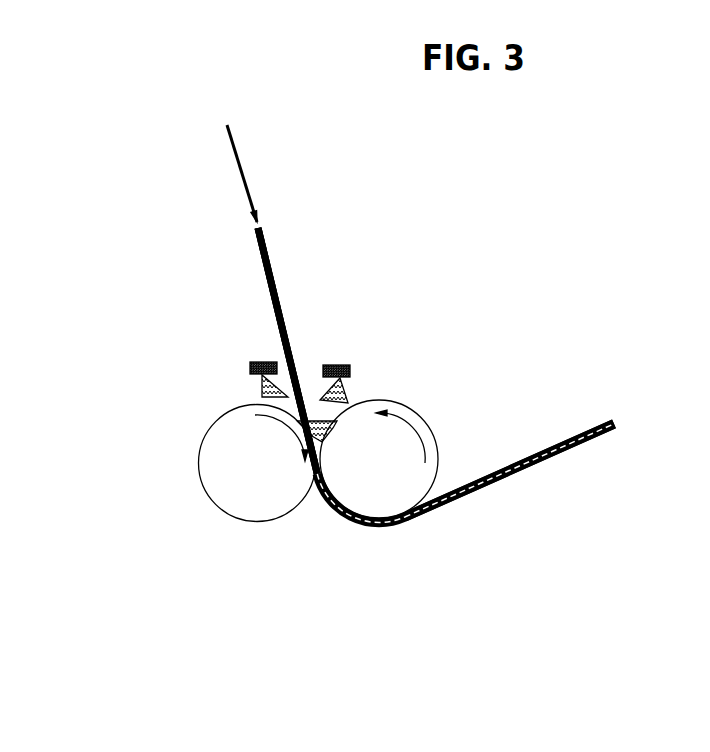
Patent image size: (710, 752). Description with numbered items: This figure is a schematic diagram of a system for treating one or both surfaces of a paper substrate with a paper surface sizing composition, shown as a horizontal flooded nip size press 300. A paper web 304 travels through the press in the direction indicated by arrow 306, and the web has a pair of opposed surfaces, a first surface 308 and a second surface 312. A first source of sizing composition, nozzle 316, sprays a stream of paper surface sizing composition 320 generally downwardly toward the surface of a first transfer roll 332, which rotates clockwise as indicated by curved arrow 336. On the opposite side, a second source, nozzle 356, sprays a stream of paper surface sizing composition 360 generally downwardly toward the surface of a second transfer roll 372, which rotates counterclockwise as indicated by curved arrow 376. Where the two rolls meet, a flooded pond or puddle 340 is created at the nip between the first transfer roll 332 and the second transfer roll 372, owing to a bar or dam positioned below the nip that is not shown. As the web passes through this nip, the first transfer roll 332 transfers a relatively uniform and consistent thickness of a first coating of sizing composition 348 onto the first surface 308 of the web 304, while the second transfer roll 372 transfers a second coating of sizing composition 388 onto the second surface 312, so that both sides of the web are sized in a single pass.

The horizontal flooded nip size press 300 is at (560, 193).
The paper web 304 is at (297, 242).
The arrow 306 is at (243, 172).
The first surface 308 is at (278, 290).
The second surface 312 is at (278, 290).
The nozzle 316 is at (253, 367).
The stream of paper surface sizing composition 320 is at (260, 393).
The first transfer roll 332 is at (215, 543).
The curved arrow 336 is at (287, 425).
The flooded pond 340 is at (319, 470).
The first coating of paper surface sizing composition 348 is at (590, 440).
The nozzle 356 is at (350, 368).
The stream of paper surface sizing composition 360 is at (343, 387).
The second transfer roll 372 is at (425, 393).
The curved arrow 376 is at (420, 437).
The second coating of paper surface sizing composition 388 is at (545, 445).